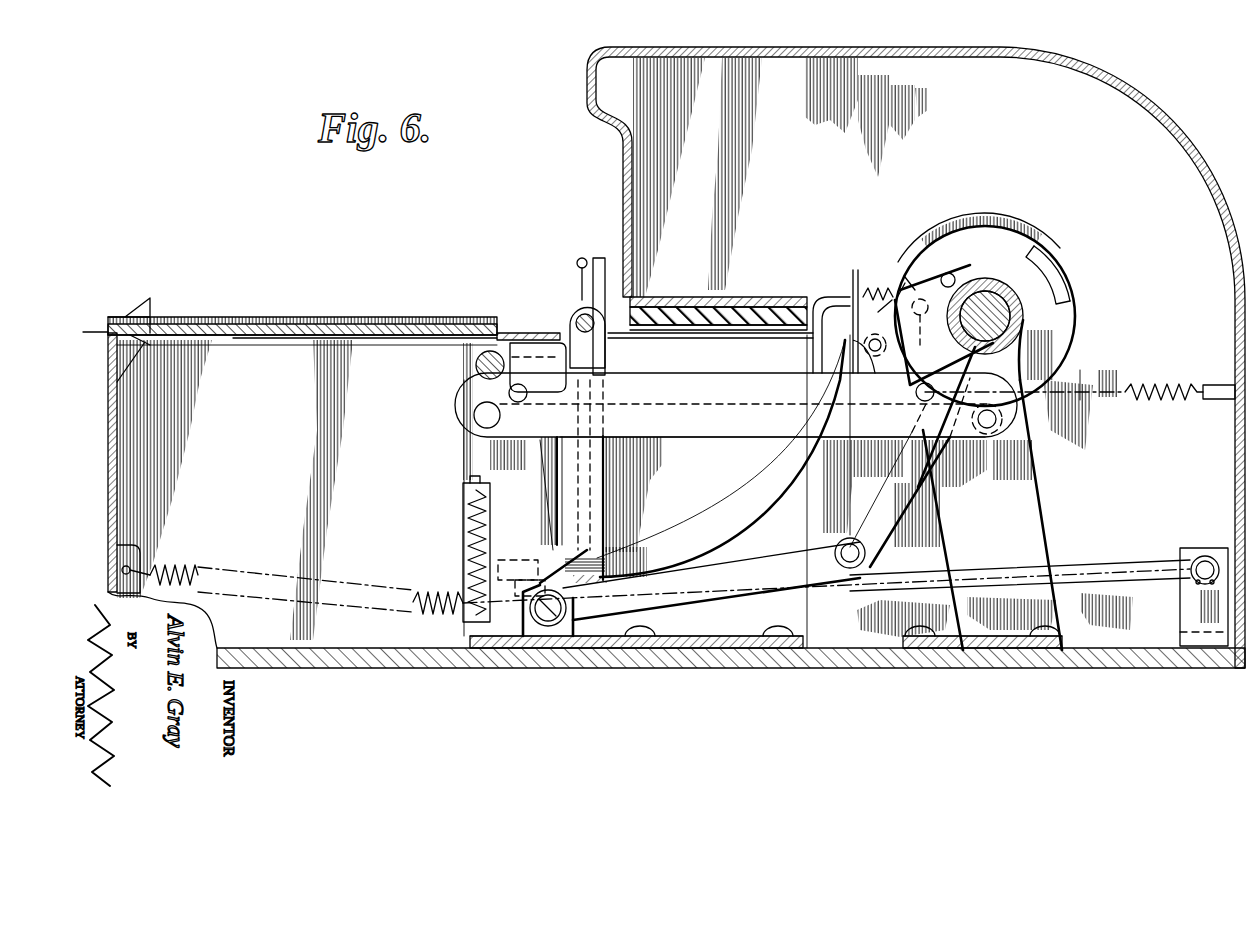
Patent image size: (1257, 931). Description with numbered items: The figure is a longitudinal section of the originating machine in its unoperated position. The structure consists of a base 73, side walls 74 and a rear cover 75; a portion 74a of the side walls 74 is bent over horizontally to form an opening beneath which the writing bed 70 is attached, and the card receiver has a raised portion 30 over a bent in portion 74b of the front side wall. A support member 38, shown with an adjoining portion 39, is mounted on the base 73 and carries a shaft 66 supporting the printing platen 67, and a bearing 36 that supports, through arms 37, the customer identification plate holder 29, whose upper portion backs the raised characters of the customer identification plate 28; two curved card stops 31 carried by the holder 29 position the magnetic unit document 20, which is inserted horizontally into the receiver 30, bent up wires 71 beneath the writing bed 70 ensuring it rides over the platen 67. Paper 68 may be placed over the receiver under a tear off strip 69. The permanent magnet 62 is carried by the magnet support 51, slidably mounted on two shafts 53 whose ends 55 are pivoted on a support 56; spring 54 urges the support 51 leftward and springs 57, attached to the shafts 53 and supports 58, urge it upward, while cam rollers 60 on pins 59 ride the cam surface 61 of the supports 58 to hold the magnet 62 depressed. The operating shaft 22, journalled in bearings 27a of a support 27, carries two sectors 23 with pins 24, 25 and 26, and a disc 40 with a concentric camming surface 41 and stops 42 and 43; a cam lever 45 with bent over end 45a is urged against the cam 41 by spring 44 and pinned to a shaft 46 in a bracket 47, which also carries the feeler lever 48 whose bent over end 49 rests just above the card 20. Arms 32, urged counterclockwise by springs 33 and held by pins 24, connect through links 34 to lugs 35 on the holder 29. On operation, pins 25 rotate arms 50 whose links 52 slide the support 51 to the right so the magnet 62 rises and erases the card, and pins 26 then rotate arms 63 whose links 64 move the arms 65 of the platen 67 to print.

The magnetic unit document 20 is at (90, 330).
The shaft 22 is at (1010, 318).
The sectors 23 is at (922, 260).
The pin 24 is at (1025, 381).
The pin 25 is at (925, 322).
The pin 26 is at (956, 274).
The support 27 is at (1035, 483).
The bearings 27a is at (1040, 356).
The customer identification plate 28 is at (577, 264).
The customer identification plate holder 29 is at (608, 488).
The receiver 30 is at (135, 300).
The curved card stops 31 is at (740, 508).
The arms 32 is at (914, 392).
The springs 33 is at (1160, 388).
The links 34 is at (682, 375).
The lugs 35 is at (508, 392).
The bearing 36 is at (580, 316).
The arms 37 is at (608, 342).
The support member 38 is at (688, 296).
The platen 39 is at (730, 300).
The disc 40 is at (1005, 258).
The camming surface 41 is at (962, 250).
The stop 42 is at (1058, 262).
The stop 43 is at (1062, 288).
The spring 44 is at (864, 297).
The cam lever 45 is at (888, 296).
The bent over end 45a is at (908, 278).
The shaft 46 is at (876, 352).
The bracket 47 is at (932, 528).
The feeler lever 48 is at (850, 296).
The bent over end 49 is at (818, 297).
The arms 50 is at (890, 524).
The magnet support 51 is at (602, 648).
The links 52 is at (772, 556).
The shafts 53 is at (1105, 564).
The spring 54 is at (432, 600).
The ends 55 is at (1206, 556).
The support 56 is at (1180, 618).
The springs 57 is at (466, 512).
The supports 58 is at (462, 532).
The pins 59 is at (546, 628).
The cam rollers 60 is at (572, 628).
The cam surface 61 is at (540, 578).
The permanent magnet 62 is at (535, 458).
The arms 63 is at (1005, 424).
The links 64 is at (700, 430).
The arms 65 is at (474, 400).
The shaft 66 is at (476, 366).
The printing platen 67 is at (548, 350).
The paper 68 is at (388, 312).
The tear off strip 69 is at (304, 318).
The writing bed 70 is at (304, 340).
The bent up wires 71 is at (505, 333).
The base 73 is at (412, 660).
The side walls 74 is at (108, 410).
The bent over portion 74a is at (240, 345).
The bent in portion 74b is at (116, 366).
The rear cover 75 is at (776, 47).